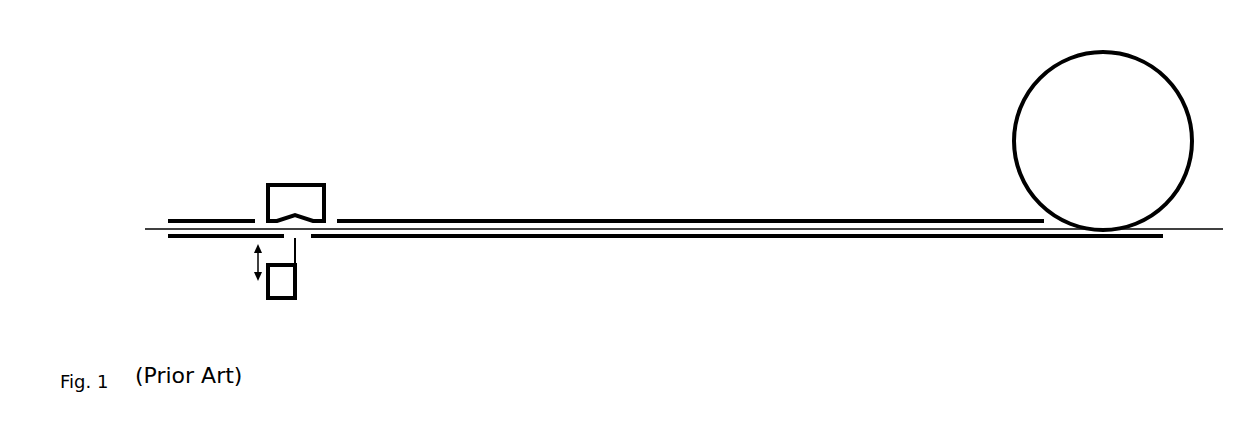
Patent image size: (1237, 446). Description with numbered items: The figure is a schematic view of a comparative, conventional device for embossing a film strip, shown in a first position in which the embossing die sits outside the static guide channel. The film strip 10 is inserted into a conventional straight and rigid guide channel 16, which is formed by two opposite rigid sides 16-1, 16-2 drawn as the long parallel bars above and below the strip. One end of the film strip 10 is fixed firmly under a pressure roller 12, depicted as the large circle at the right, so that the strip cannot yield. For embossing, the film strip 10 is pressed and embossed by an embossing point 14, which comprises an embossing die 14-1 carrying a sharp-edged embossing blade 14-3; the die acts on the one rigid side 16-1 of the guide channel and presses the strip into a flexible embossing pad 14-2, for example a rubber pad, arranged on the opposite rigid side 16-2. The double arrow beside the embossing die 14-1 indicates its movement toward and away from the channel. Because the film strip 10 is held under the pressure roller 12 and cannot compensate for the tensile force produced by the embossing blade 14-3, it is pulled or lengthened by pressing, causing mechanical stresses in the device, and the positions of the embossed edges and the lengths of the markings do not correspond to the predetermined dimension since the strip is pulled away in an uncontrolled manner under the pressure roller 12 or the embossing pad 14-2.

The film strip 10 is at (1200, 231).
The pressure roller 12 is at (1018, 107).
The embossing point 14 is at (280, 175).
The embossing die 14-1 is at (297, 287).
The flexible embossing pad 14-2 is at (265, 187).
The sharp-edged embossing blade 14-3 is at (297, 253).
The guide channel 16 is at (605, 231).
The rigid side of guide channel 16-1 is at (613, 239).
The opposite rigid side of guide channel 16-2 is at (441, 218).